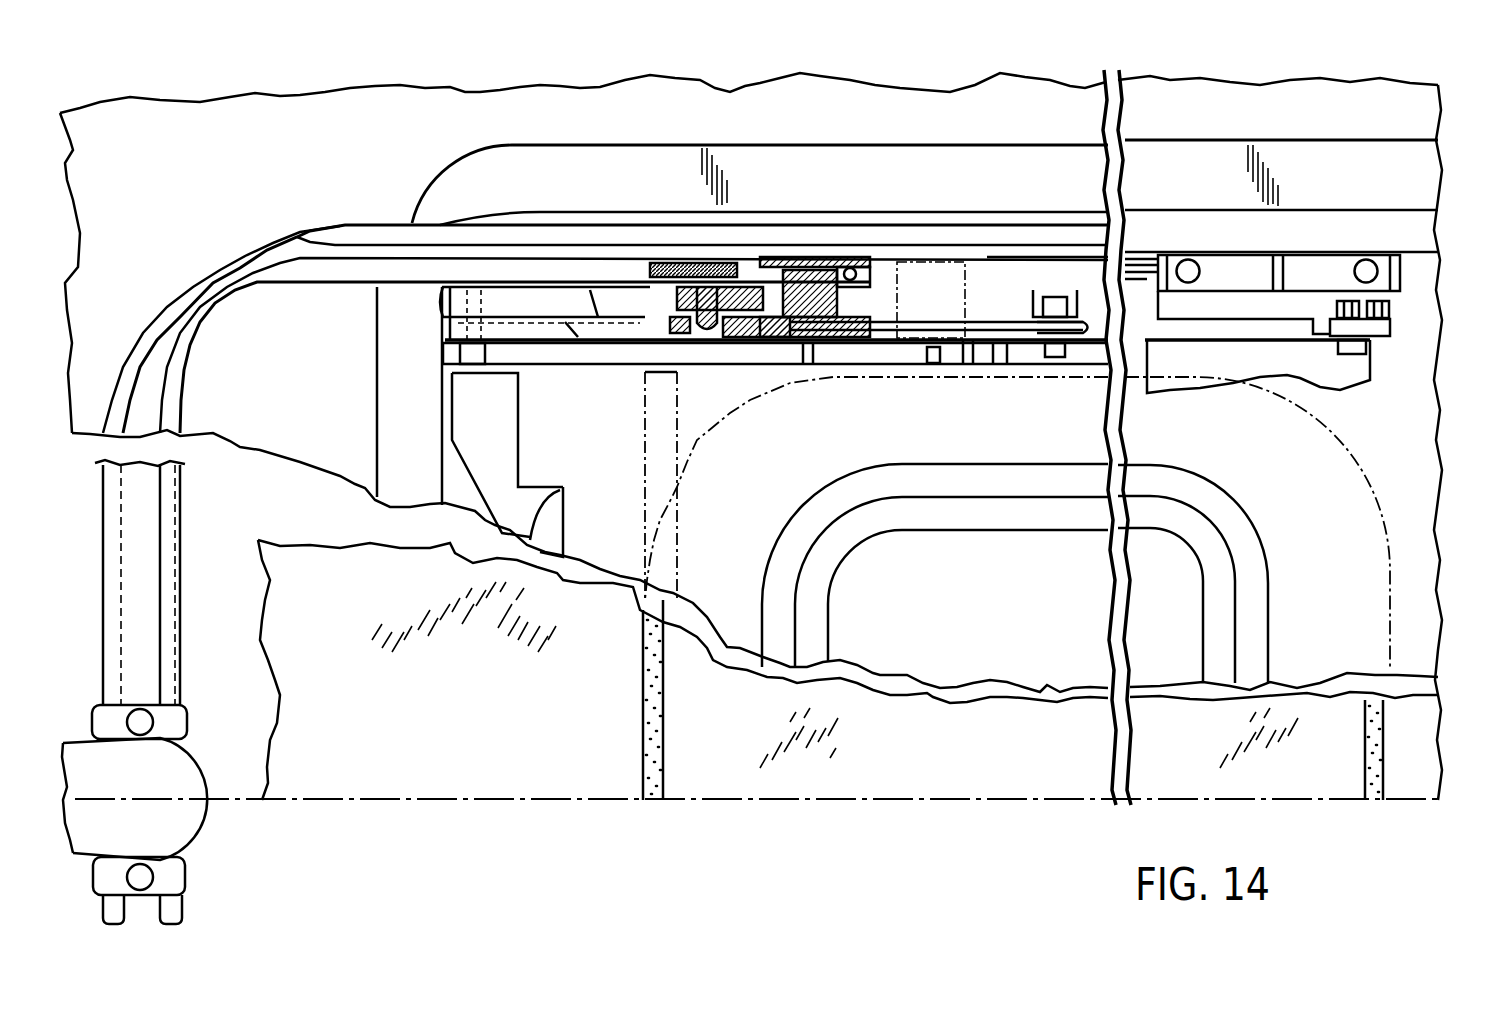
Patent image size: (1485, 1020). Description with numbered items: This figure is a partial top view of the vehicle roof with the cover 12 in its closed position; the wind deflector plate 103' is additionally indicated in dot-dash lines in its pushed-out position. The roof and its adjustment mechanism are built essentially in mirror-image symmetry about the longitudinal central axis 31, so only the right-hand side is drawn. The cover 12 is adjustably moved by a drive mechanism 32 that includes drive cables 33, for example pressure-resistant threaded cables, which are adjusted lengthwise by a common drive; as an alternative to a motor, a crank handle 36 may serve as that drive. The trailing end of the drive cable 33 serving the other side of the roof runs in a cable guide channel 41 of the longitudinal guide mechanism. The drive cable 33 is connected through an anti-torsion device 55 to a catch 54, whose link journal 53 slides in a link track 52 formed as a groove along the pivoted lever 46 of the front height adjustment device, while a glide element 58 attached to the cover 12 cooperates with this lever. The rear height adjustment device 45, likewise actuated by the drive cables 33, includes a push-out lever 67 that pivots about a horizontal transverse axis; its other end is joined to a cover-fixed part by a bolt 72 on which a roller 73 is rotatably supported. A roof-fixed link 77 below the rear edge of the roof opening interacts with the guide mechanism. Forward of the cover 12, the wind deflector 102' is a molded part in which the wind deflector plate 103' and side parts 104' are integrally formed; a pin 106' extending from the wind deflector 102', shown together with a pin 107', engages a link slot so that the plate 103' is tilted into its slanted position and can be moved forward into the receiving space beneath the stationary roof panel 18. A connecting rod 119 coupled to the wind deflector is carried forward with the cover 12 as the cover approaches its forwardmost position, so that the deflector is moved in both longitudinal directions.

The cable guide channel 41 is at (386, 238).
The fastener 107' is at (546, 203).
The pin 106' is at (545, 191).
The drive cable 33 is at (690, 262).
The anti-torsion device 55 is at (766, 287).
The catch 54 is at (810, 265).
The link journal 53 is at (813, 337).
The link track 52 is at (862, 258).
The pivoted lever 46 is at (990, 323).
The glide element 58 is at (1057, 297).
The link 77 is at (1212, 303).
The roller 73 is at (1350, 300).
The push-out lever 67 is at (1376, 328).
The bolt 72 is at (1355, 355).
The rear height adjustment device 45 is at (1390, 368).
The wind deflector 102' is at (362, 396).
The side part 104' is at (526, 455).
The wind deflector plate 103' is at (589, 504).
The connecting rod 119 is at (748, 345).
The crank handle 36 is at (85, 755).
The drive mechanism 32 is at (240, 852).
The stationary roof panel 18 is at (462, 759).
The cover 12 is at (1016, 761).
The longitudinal central axis 31 is at (860, 800).